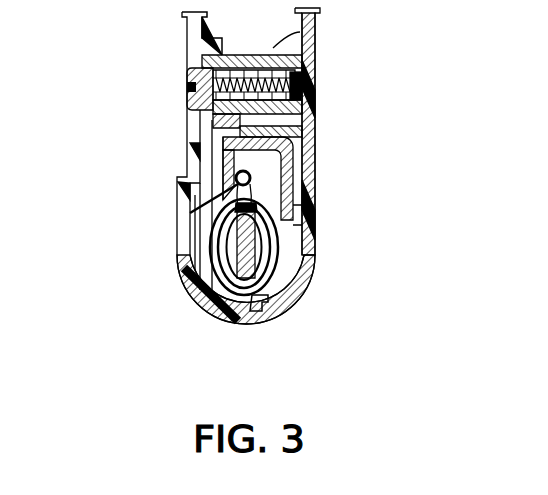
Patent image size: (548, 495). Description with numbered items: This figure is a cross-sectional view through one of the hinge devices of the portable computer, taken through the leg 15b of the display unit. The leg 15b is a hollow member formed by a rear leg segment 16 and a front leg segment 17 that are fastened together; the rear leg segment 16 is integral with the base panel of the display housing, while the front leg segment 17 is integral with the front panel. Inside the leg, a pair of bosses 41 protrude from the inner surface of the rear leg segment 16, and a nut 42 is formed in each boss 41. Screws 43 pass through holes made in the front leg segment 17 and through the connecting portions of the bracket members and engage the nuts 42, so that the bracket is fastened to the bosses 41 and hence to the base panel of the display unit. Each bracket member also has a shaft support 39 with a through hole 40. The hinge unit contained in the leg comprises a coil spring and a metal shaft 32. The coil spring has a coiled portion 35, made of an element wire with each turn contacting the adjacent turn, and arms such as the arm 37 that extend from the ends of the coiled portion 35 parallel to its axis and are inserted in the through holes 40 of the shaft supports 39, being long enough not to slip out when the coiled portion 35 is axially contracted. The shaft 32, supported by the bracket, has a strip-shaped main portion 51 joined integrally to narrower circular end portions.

The leg 15b is at (250, 318).
The rear leg segment 16 is at (306, 200).
The front leg segment 17 is at (193, 277).
The shaft 32 is at (268, 243).
The coiled portion 35 is at (255, 265).
The arm 37 is at (187, 203).
The shaft support 39 is at (207, 233).
The through hole 40 is at (237, 180).
The boss 41 is at (270, 48).
The nut 42 is at (303, 96).
The screw 43 is at (197, 100).
The main portion 51 is at (270, 270).